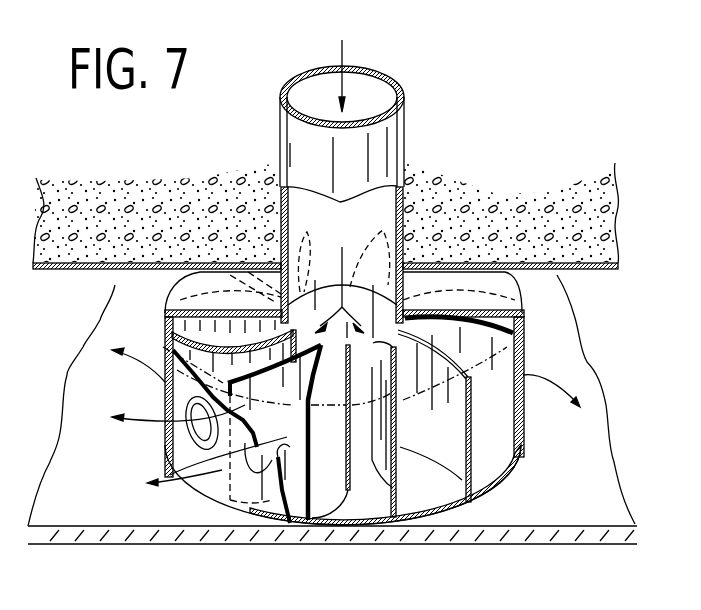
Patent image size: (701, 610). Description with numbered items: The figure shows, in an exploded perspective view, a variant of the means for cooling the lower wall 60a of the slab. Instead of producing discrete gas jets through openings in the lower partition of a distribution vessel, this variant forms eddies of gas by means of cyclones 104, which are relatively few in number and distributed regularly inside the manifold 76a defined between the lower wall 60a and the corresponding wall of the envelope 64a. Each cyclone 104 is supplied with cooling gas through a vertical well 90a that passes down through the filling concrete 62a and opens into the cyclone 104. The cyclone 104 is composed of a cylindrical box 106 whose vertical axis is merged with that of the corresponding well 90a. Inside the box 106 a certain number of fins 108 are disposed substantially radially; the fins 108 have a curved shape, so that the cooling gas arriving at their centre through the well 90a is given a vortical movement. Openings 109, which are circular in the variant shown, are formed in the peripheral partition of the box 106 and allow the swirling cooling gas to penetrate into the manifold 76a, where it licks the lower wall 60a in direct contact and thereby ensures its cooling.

The vertical well 90a is at (404, 118).
The filling concrete 62a is at (176, 203).
The manifold 76a is at (66, 345).
The envelope 64a is at (590, 270).
The lower wall of the slab 60a is at (117, 538).
The openings 109 is at (187, 458).
The cyclone 104 is at (372, 527).
The cylindrical box 106 is at (267, 512).
The fins 108 is at (457, 470).